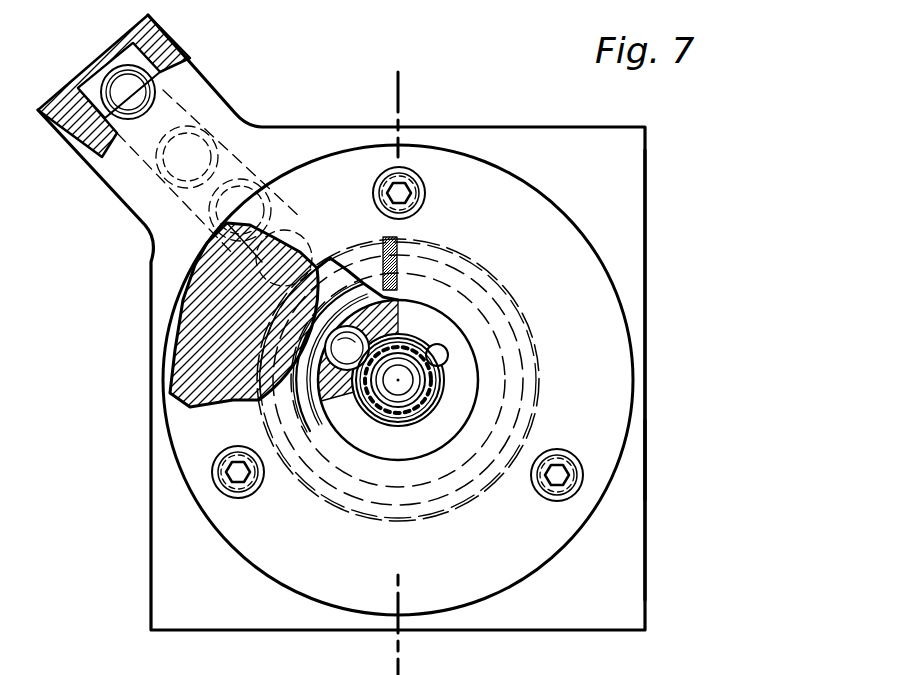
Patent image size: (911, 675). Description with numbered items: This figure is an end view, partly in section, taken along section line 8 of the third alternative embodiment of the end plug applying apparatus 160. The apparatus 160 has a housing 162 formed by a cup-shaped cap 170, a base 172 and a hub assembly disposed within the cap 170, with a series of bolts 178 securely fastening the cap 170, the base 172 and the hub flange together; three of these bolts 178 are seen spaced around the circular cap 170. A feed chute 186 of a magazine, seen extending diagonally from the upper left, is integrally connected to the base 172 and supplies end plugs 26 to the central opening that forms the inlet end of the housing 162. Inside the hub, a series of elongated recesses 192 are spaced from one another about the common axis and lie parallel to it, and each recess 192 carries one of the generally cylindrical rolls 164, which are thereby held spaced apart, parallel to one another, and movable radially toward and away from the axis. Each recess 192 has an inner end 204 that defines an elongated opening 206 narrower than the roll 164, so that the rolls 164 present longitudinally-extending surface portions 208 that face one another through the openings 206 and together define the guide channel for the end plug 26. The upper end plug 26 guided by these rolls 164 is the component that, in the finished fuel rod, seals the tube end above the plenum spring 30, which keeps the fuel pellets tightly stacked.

The section line 8— 8 is at (467, 90).
The end plug applying apparatus 160 is at (517, 122).
The housing 162 is at (648, 200).
The rolls 164 is at (326, 337).
The cup-shaped cap 170 is at (630, 397).
The base 172 is at (643, 460).
The bolts 178 is at (416, 186).
The feed chute 186 is at (108, 188).
The elongated recesses 192 is at (322, 370).
The inner end 204 is at (445, 376).
The elongated opening 206 is at (428, 347).
The longitudinally-extending surface portions 208 is at (450, 387).
The plenum spring 30 is at (403, 388).
The upper end plug 26 is at (398, 395).